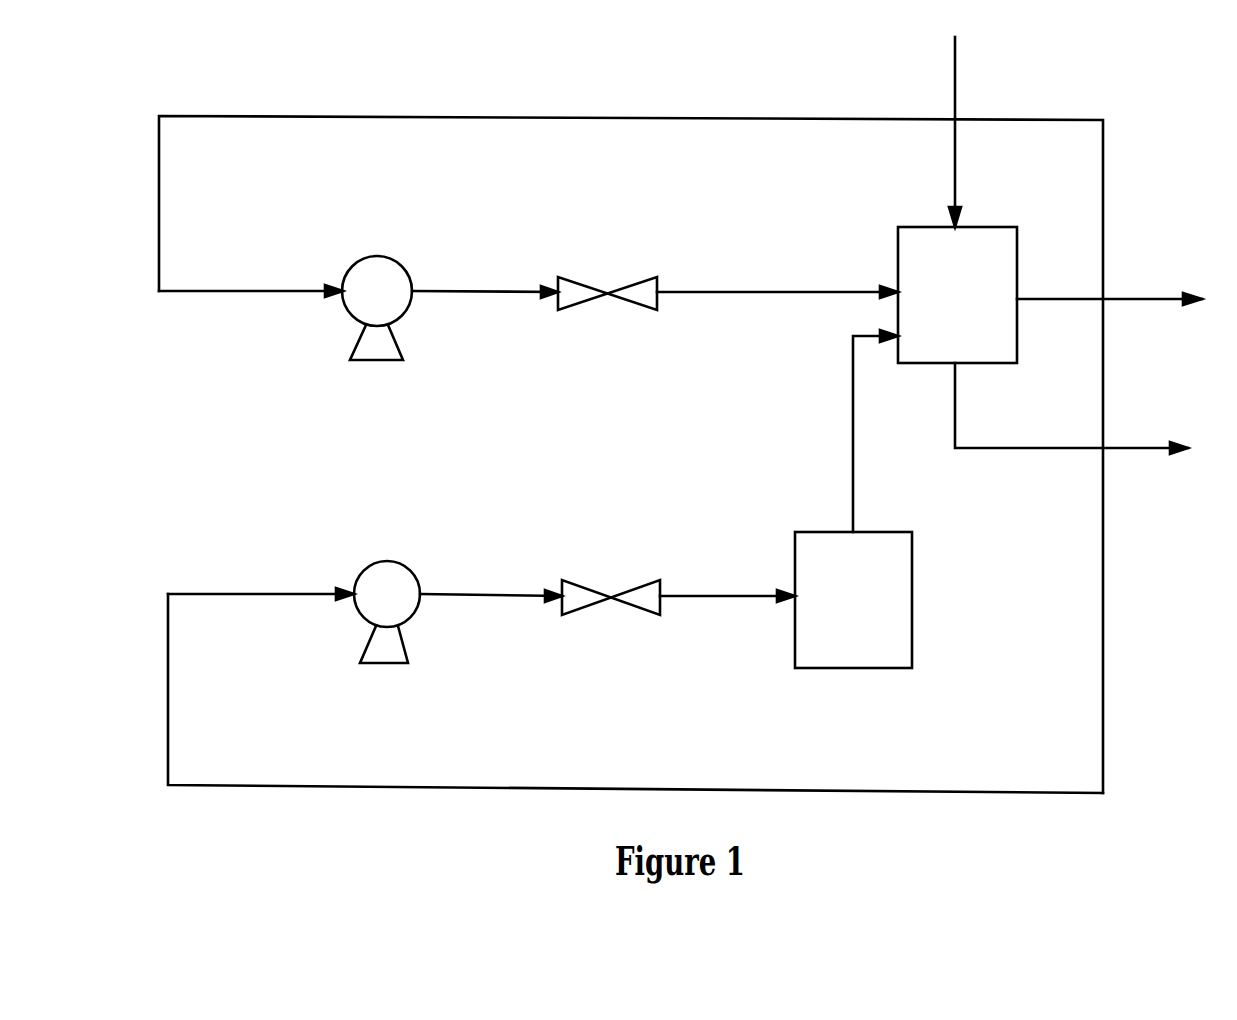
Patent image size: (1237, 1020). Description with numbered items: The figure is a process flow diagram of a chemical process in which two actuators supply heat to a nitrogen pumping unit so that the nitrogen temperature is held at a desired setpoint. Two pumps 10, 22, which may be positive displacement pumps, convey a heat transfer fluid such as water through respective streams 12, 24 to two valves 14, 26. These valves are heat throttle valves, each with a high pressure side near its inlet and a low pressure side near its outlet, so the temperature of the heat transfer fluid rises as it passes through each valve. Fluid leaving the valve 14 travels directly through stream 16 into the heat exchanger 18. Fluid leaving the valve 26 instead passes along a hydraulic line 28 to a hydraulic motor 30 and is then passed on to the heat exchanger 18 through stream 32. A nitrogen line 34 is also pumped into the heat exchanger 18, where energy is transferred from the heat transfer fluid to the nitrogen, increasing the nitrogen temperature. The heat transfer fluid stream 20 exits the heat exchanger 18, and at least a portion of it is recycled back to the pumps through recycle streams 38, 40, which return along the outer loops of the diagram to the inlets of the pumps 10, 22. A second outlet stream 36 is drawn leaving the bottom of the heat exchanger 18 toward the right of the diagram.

The pump 10 is at (393, 260).
The stream 12 is at (447, 292).
The valve 14 is at (583, 281).
The stream 16 is at (730, 292).
The heat exchanger 18 is at (898, 262).
The heat transfer fluid stream 20 is at (1122, 298).
The pump 22 is at (403, 562).
The stream 24 is at (467, 596).
The valve 26 is at (600, 585).
The hydraulic line 28 is at (697, 597).
The hydraulic motor 30 is at (912, 612).
The stream 32 is at (853, 480).
The nitrogen line 34 is at (955, 100).
The heat exchanger second outlet line 36 is at (1005, 448).
The recycle stream 38 is at (740, 119).
The recycle stream 40 is at (700, 790).